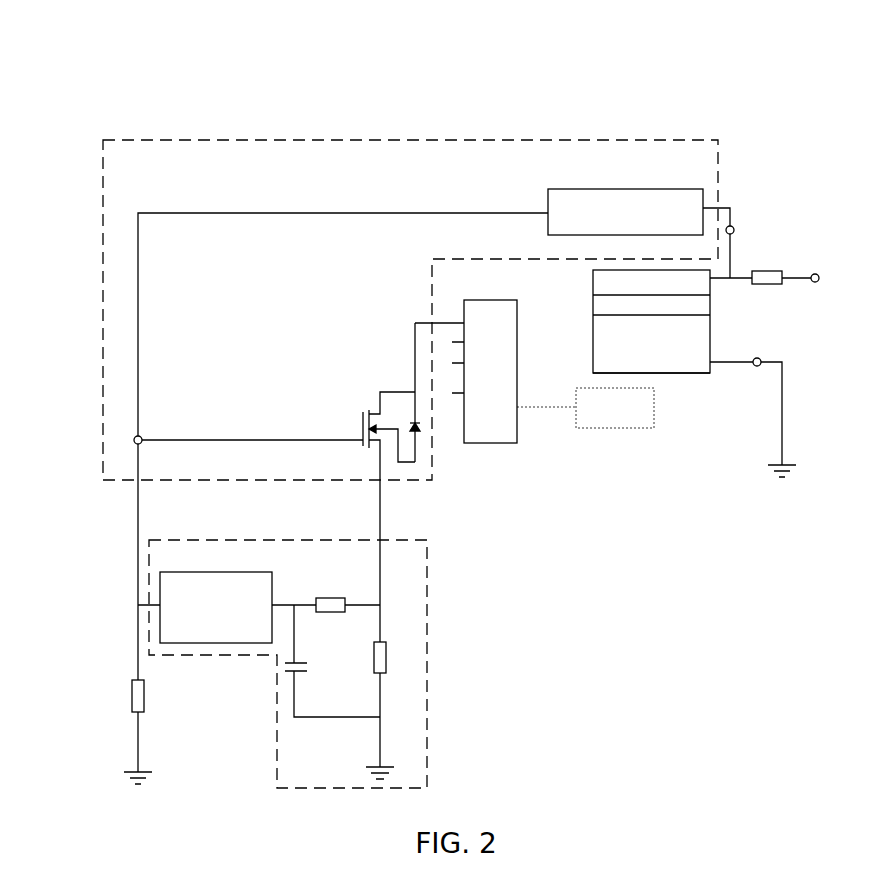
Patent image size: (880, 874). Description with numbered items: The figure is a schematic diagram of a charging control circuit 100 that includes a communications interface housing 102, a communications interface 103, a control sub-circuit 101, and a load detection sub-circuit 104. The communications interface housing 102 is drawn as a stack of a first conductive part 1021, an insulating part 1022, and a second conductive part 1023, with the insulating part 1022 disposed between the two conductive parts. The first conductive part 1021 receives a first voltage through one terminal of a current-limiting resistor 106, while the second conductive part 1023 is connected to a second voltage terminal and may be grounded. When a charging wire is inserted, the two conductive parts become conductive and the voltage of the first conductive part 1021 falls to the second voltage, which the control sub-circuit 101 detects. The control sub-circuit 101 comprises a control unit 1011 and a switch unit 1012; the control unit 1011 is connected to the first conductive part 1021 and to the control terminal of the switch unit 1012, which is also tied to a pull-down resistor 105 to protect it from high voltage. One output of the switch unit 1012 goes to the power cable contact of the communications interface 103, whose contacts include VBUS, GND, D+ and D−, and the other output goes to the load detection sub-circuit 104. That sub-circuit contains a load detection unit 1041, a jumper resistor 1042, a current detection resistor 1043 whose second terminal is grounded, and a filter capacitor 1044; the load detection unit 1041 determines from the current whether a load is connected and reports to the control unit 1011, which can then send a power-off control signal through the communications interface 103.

The charging control circuit 100 is at (503, 42).
The control sub-circuit 101 is at (603, 140).
The control unit 1011 is at (573, 189).
The switch unit 1012 is at (400, 390).
The communications interface housing 102 is at (655, 322).
The first conductive part 1021 is at (630, 288).
The insulating part 1022 is at (630, 305).
The second conductive part 1023 is at (643, 335).
The communications interface 103 is at (517, 437).
The load detection sub-circuit 104 is at (329, 643).
The load detection unit 1041 is at (243, 572).
The jumper resistor 1042 is at (329, 598).
The current detection resistor 1043 is at (386, 650).
The filter capacitor 1044 is at (287, 669).
The pull-down resistor 105 is at (132, 693).
The current-limiting resistor 106 is at (772, 272).